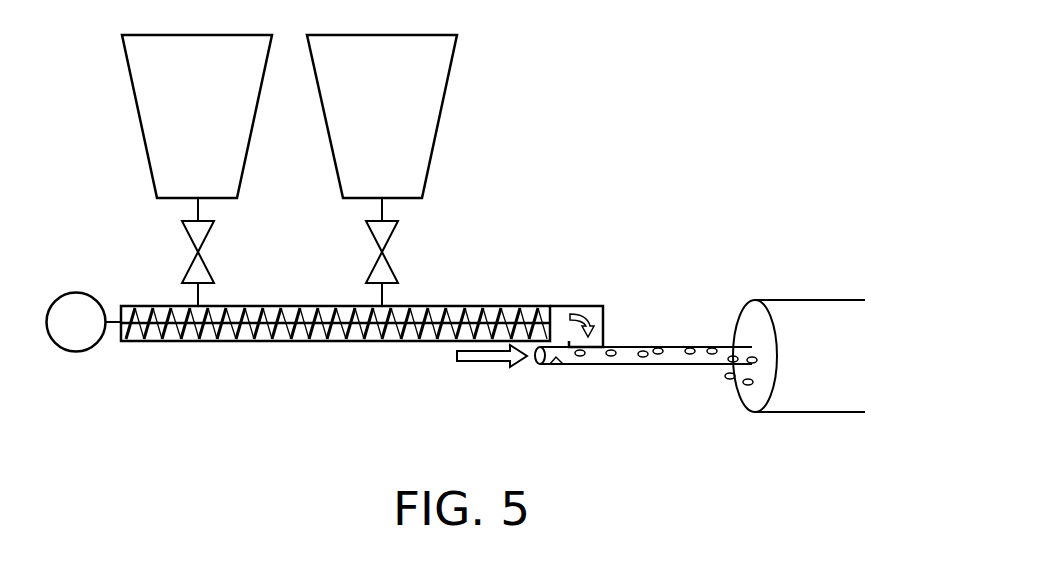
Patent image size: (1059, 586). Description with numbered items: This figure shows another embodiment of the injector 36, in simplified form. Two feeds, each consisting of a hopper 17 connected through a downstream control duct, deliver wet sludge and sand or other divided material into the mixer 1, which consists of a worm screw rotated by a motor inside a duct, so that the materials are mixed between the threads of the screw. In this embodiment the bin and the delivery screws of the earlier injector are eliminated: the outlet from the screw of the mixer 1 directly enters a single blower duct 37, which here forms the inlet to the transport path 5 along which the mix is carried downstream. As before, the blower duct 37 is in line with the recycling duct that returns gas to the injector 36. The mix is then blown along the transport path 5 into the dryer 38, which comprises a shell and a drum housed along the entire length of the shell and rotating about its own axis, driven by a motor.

The mixer 1 is at (480, 287).
The hopper 17 is at (439, 90).
The injector 36 is at (579, 372).
The blower duct 37 is at (636, 343).
The transport path 5 is at (676, 379).
The dryer 38 is at (804, 295).